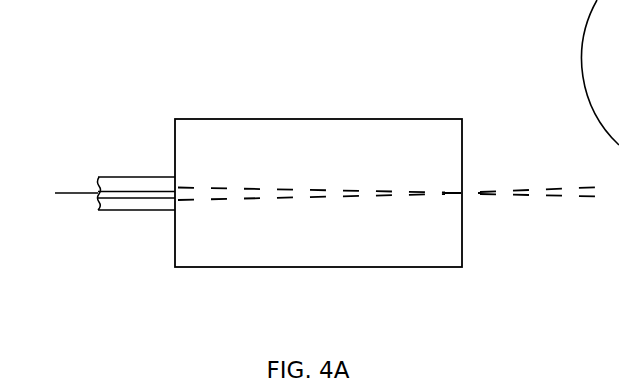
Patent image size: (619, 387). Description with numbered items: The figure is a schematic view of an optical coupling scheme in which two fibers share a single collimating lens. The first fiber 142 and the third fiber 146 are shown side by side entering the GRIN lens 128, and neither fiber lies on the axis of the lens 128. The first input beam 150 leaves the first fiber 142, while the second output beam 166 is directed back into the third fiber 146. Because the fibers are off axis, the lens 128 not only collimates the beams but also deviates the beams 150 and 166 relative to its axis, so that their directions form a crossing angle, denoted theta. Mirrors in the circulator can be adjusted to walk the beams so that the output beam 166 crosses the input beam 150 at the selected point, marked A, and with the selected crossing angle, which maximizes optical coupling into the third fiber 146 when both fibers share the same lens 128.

The GRIN lens 128 is at (234, 119).
The third fiber 146 is at (123, 177).
The first fiber 142 is at (143, 210).
The second output beam 166 is at (273, 188).
The first input beam 150 is at (250, 200).
The selected crossing point A is at (465, 197).